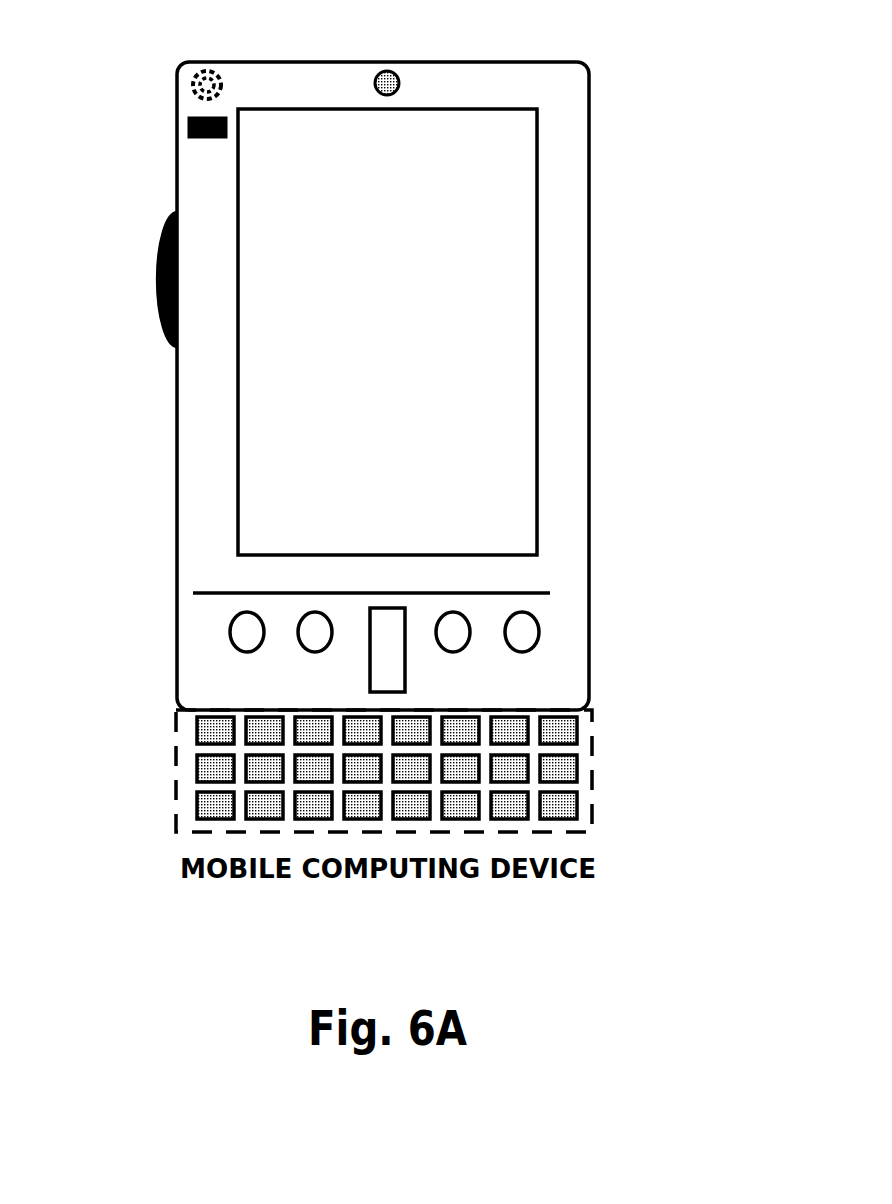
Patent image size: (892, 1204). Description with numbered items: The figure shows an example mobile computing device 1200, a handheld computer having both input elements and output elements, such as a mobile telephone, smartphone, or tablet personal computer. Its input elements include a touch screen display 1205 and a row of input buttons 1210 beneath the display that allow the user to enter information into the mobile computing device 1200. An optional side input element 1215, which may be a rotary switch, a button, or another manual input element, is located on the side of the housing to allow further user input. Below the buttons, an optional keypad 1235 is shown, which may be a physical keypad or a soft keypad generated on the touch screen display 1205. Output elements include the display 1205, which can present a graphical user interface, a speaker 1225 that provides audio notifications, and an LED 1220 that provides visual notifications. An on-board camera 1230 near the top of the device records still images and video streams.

The mobile computing device 1200 is at (591, 78).
The touch screen display 1205 is at (263, 492).
The input buttons 1210 is at (525, 643).
The side input element 1215 is at (155, 287).
The LED 1220 is at (190, 122).
The speaker 1225 is at (190, 82).
The on-board camera 1230 is at (399, 78).
The keypad 1235 is at (175, 802).